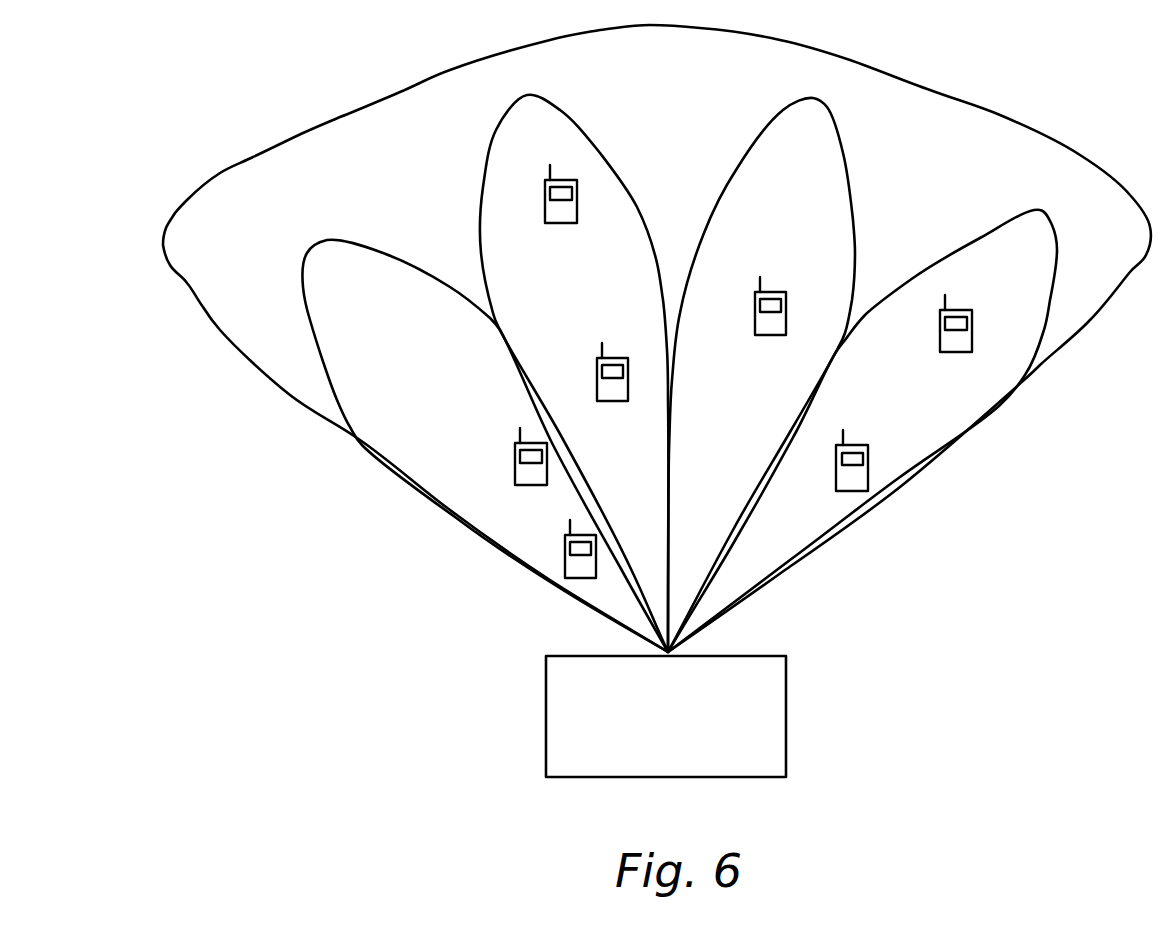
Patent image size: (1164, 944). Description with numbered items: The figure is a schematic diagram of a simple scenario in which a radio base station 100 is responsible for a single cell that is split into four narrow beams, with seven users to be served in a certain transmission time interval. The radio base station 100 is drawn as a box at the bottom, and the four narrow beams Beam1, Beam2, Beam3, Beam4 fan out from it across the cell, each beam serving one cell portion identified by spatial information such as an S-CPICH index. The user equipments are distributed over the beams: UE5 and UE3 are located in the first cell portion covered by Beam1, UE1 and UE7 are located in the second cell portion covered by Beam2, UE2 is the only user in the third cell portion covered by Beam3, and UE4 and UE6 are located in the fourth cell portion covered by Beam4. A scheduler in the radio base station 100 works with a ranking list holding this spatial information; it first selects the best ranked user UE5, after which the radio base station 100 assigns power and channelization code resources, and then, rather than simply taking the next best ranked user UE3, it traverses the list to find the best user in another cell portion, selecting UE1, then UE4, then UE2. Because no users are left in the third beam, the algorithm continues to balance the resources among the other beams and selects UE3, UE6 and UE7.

The radio base station 100 is at (546, 722).
The user equipment UE1 is at (618, 392).
The user equipment UE2 is at (775, 285).
The user equipment UE3 is at (503, 447).
The user equipment UE4 is at (856, 445).
The user equipment UE5 is at (552, 544).
The user equipment UE6 is at (976, 309).
The user equipment UE7 is at (568, 214).
The first narrow beam Beam1 is at (480, 424).
The second narrow beam Beam2 is at (574, 359).
The third narrow beam Beam3 is at (761, 356).
The fourth narrow beam Beam4 is at (879, 407).